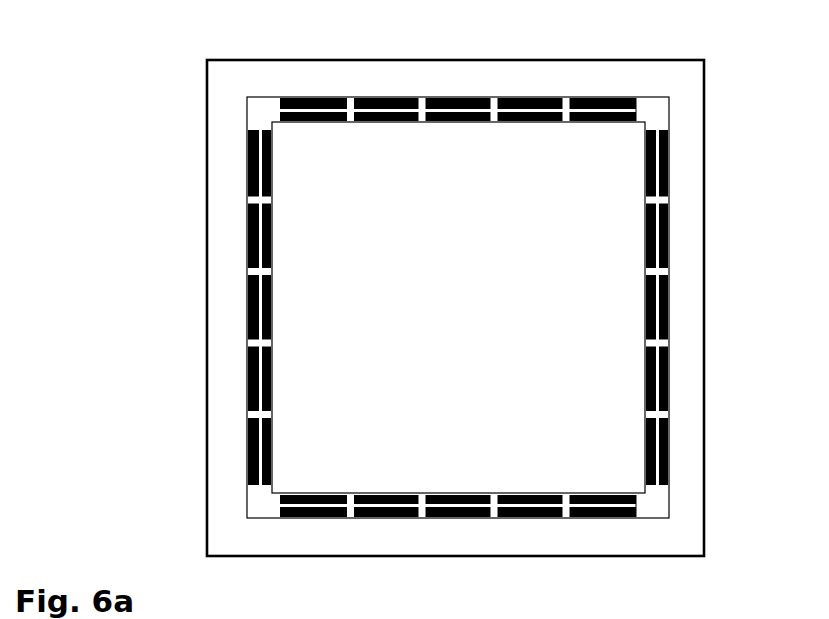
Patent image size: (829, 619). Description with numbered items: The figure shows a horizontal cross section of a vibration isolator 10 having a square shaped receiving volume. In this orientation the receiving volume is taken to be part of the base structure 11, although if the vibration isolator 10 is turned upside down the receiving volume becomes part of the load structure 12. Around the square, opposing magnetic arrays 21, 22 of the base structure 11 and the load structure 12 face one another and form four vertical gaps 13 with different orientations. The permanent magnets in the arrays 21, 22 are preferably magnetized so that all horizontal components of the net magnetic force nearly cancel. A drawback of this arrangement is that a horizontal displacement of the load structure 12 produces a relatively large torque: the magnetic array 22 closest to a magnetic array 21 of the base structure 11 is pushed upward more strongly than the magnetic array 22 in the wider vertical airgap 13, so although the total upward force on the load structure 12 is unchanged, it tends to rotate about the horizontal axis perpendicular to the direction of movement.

The vibration isolator 10 is at (204, 49).
The base structure 11 is at (704, 306).
The load structure 12 is at (645, 130).
The vertical gap 13 is at (652, 503).
The magnetic array 21 is at (670, 176).
The magnetic array 22 is at (645, 305).